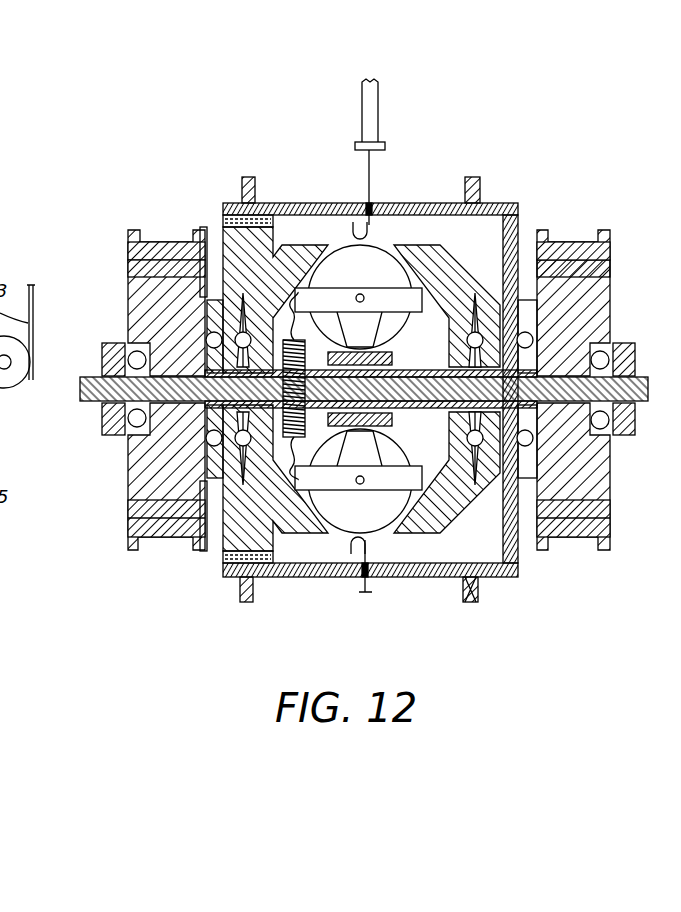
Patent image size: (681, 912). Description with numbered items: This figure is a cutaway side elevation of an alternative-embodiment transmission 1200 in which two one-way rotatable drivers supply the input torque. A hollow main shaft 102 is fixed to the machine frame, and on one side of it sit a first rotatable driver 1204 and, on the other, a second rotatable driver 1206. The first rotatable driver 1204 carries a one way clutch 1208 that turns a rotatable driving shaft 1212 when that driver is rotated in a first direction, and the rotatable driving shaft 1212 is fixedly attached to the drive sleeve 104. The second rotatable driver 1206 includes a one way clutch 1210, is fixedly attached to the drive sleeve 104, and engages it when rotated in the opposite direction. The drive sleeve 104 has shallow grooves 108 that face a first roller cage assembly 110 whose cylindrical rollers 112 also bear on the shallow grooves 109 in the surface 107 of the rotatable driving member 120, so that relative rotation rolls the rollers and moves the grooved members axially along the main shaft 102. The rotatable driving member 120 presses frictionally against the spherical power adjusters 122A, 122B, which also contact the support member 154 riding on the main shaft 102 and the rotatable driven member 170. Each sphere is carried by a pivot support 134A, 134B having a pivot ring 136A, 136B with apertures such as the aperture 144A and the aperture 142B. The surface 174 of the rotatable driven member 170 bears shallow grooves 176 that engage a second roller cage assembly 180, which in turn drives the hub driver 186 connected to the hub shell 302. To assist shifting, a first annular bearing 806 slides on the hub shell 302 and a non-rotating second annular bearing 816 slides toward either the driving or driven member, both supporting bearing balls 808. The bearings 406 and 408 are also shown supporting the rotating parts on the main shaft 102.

The transmission 1200 is at (200, 108).
The main shaft 102 is at (83, 394).
The drive sleeve 104 is at (556, 515).
The surface 107 is at (511, 216).
The shallow grooves 108 is at (235, 575).
The shallow grooves 109 is at (528, 262).
The first roller cage assembly 110 is at (515, 540).
The cylindrical rollers 112 is at (560, 327).
The rotatable driving member 120 is at (372, 222).
The spherical power adjuster 122A is at (400, 262).
The spherical power adjuster 122B is at (358, 500).
The pivot support 134A is at (272, 278).
The pivot support 134B is at (326, 530).
The pivot ring 136A is at (238, 280).
The pivot ring 136B is at (470, 500).
The aperture 142B is at (390, 505).
The aperture 144A is at (460, 270).
The support member 154 is at (478, 597).
The rotatable driven member 170 is at (225, 222).
The surface 174 is at (265, 580).
The shallow grooves 176 is at (220, 490).
The second roller cage assembly 180 is at (128, 515).
The hub driver 186 is at (228, 262).
The hub shell 302 is at (237, 595).
The ball bearing 406 is at (603, 425).
The hub flange 408 is at (605, 530).
The first annular bearing 806 is at (336, 205).
The bearing balls 808 is at (344, 205).
The second annular bearing 816 is at (362, 228).
The first rotatable driver 1204 is at (128, 247).
The second rotatable driver 1206 is at (596, 228).
The one way clutch 1208 is at (130, 265).
The one way clutch 1210 is at (103, 412).
The rotatable driving shaft 1212 is at (177, 371).